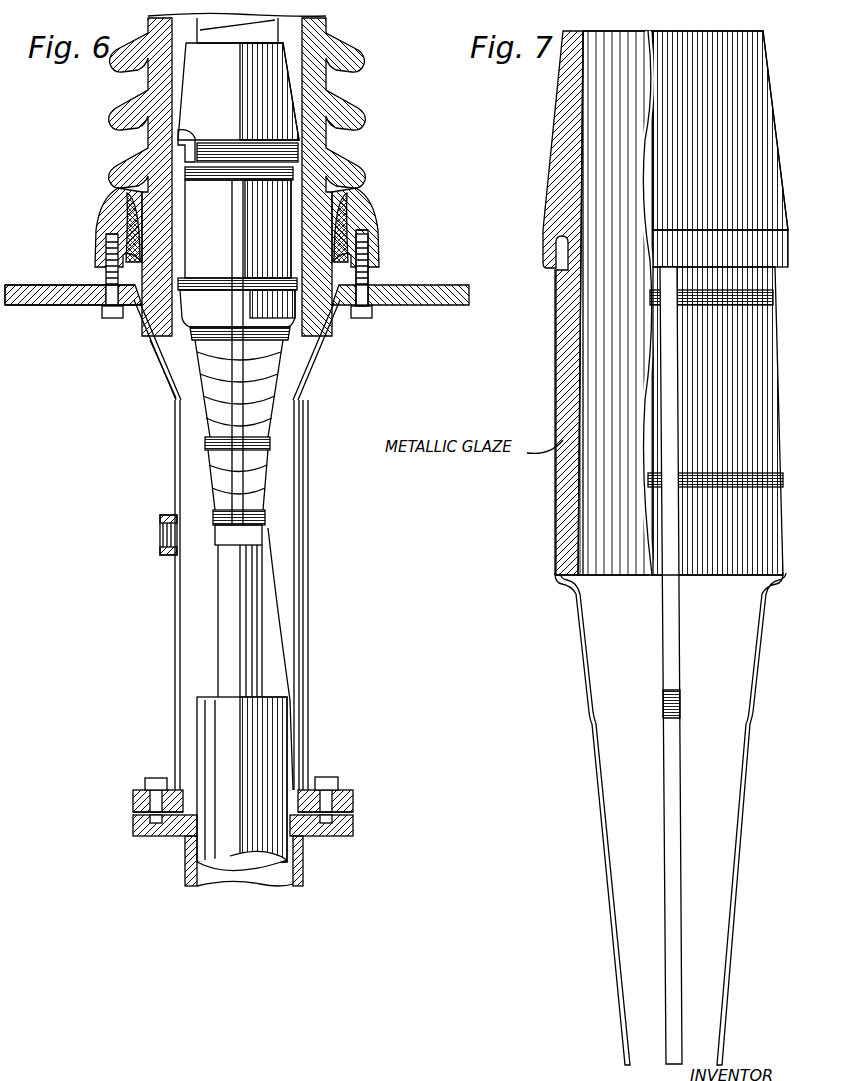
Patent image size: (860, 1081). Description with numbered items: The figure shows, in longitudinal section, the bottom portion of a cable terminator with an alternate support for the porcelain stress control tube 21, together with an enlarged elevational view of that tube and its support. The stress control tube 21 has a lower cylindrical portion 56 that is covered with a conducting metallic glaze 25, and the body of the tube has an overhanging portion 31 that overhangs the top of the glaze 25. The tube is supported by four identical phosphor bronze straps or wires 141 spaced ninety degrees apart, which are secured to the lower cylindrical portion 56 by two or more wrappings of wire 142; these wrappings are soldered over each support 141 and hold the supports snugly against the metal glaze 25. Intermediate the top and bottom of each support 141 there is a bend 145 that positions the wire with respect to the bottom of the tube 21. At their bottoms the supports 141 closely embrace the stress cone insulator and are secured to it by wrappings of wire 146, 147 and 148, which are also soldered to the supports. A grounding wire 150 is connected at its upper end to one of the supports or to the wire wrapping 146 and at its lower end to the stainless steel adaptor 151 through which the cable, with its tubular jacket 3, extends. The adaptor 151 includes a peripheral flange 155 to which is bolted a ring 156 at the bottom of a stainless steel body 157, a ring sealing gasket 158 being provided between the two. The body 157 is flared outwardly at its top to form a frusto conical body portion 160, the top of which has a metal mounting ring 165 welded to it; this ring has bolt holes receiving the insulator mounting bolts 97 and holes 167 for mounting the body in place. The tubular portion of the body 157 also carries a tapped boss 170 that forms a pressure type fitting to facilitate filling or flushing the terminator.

In FIG. 6, the stress control tube 21 is at (280, 90).
In FIG. 7, the stress control tube 21 is at (556, 156).
In FIG. 6, the holes 167 is at (25, 290).
In FIG. 6, the metal mounting ring 165 is at (45, 306).
In FIG. 6, the insulator mounting bolts 97 is at (368, 275).
In FIG. 6, the wrapping of wire 148 is at (268, 333).
In FIG. 6, the frusto conical body portion 160 is at (172, 362).
In FIG. 6, the phosphor bronze straps or wires 141 is at (270, 428).
In FIG. 7, the phosphor bronze straps or wires 141 is at (780, 389).
In FIG. 6, the wrapping of wire 147 is at (255, 450).
In FIG. 6, the wrapping of wire 146 is at (265, 515).
In FIG. 6, the tapped boss 170 is at (163, 560).
In FIG. 6, the grounding wire 150 is at (300, 605).
In FIG. 6, the stainless steel body 157 is at (308, 688).
In FIG. 6, the tubular jacket 3 is at (278, 732).
In FIG. 6, the ring 156 is at (352, 796).
In FIG. 6, the stainless steel adaptor 151 is at (234, 829).
In FIG. 6, the peripheral flange 155 is at (353, 825).
In FIG. 6, the ring sealing gasket 158 is at (315, 838).
In FIG. 7, the overhanging portion 31 is at (550, 275).
In FIG. 7, the wrappings of wire 142 is at (706, 306).
In FIG. 7, the conducting metallic glaze 25 is at (578, 417).
In FIG. 7, the lower cylindrical portion 56 is at (575, 462).
In FIG. 7, the bend 145 is at (558, 590).